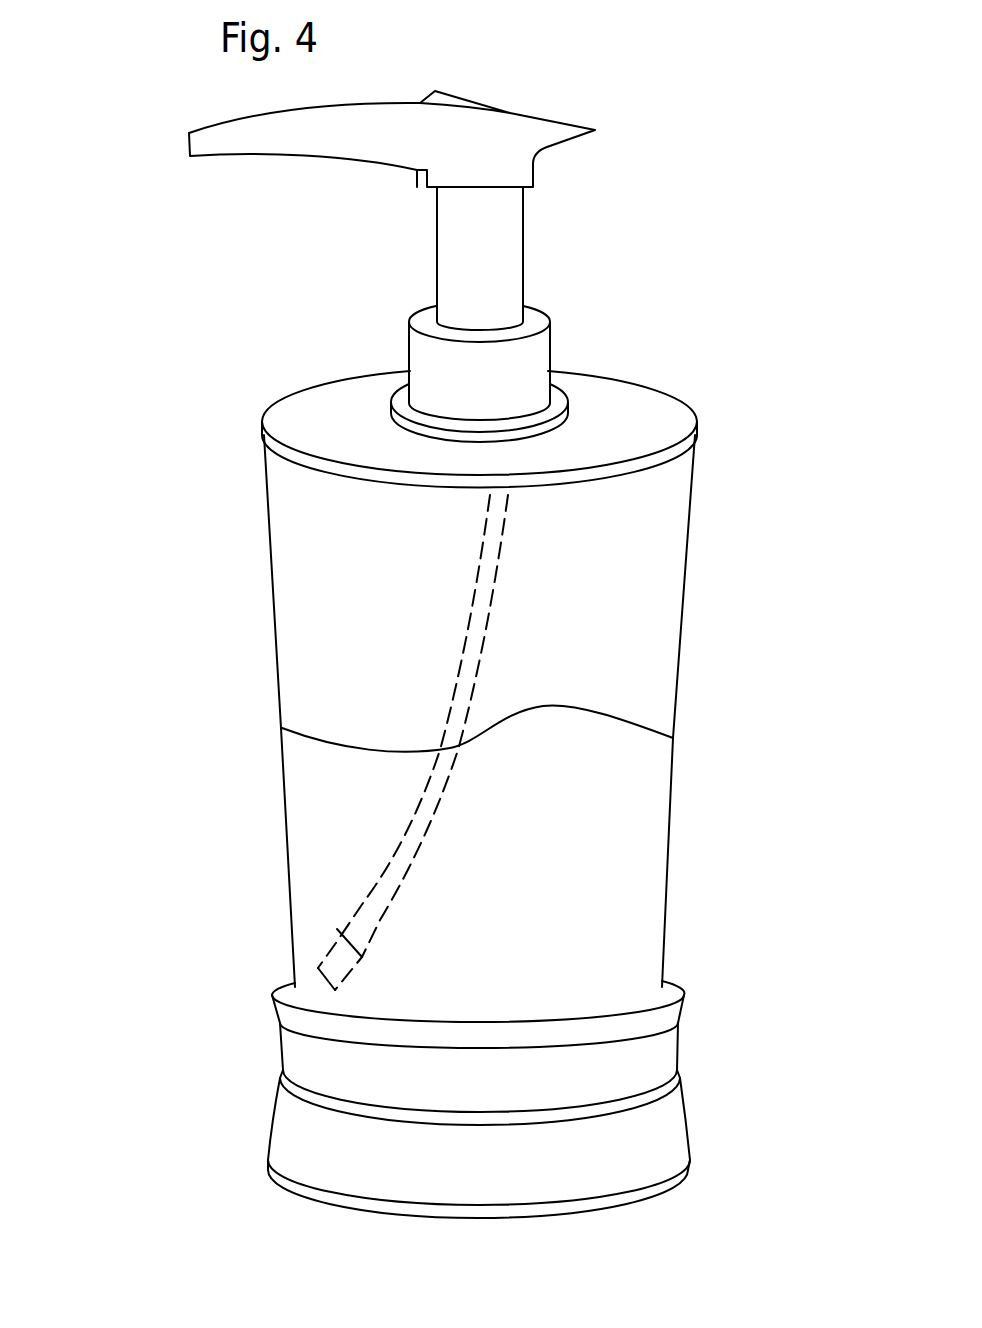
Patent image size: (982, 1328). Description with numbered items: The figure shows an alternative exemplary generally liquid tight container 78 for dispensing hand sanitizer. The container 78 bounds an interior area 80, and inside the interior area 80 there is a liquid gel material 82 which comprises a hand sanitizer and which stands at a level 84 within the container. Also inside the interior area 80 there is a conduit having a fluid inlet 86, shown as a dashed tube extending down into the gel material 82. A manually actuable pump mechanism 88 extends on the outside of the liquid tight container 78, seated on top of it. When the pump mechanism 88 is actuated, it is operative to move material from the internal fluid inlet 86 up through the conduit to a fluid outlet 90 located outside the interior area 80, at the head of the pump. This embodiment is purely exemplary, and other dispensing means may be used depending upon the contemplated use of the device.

The liquid tight container 78 is at (458, 794).
The interior area 80 is at (610, 557).
The liquid gel material 82 is at (595, 910).
The level 84 is at (290, 732).
The fluid inlet 86 is at (313, 965).
The manually actuable pump mechanism 88 is at (531, 303).
The fluid outlet 90 is at (188, 145).